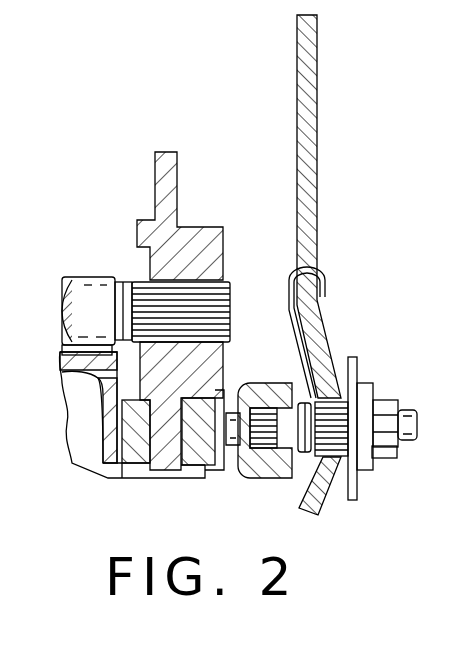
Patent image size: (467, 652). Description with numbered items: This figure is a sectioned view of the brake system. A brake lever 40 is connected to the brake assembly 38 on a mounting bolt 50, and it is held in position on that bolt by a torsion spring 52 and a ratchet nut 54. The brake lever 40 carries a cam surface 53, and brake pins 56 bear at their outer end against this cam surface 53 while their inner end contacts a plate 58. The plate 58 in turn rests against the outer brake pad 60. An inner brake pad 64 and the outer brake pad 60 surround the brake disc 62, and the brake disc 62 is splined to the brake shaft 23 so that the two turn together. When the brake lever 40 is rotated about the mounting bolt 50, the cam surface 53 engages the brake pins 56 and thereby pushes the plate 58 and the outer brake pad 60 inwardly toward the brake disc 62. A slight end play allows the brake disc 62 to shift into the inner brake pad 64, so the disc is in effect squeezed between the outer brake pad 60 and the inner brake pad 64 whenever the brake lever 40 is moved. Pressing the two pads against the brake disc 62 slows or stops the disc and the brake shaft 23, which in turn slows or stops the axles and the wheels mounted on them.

The brake shaft 23 is at (58, 282).
The brake assembly 38 is at (392, 469).
The brake lever 40 is at (317, 50).
The mounting bolt 50 is at (415, 420).
The torsion spring 52 is at (325, 287).
The cam surface 53 is at (310, 463).
The ratchet nut 54 is at (333, 450).
The brake pins 56 is at (234, 405).
The plate 58 is at (228, 465).
The outer brake pad 60 is at (192, 447).
The brake disc 62 is at (155, 173).
The inner brake pad 64 is at (143, 455).